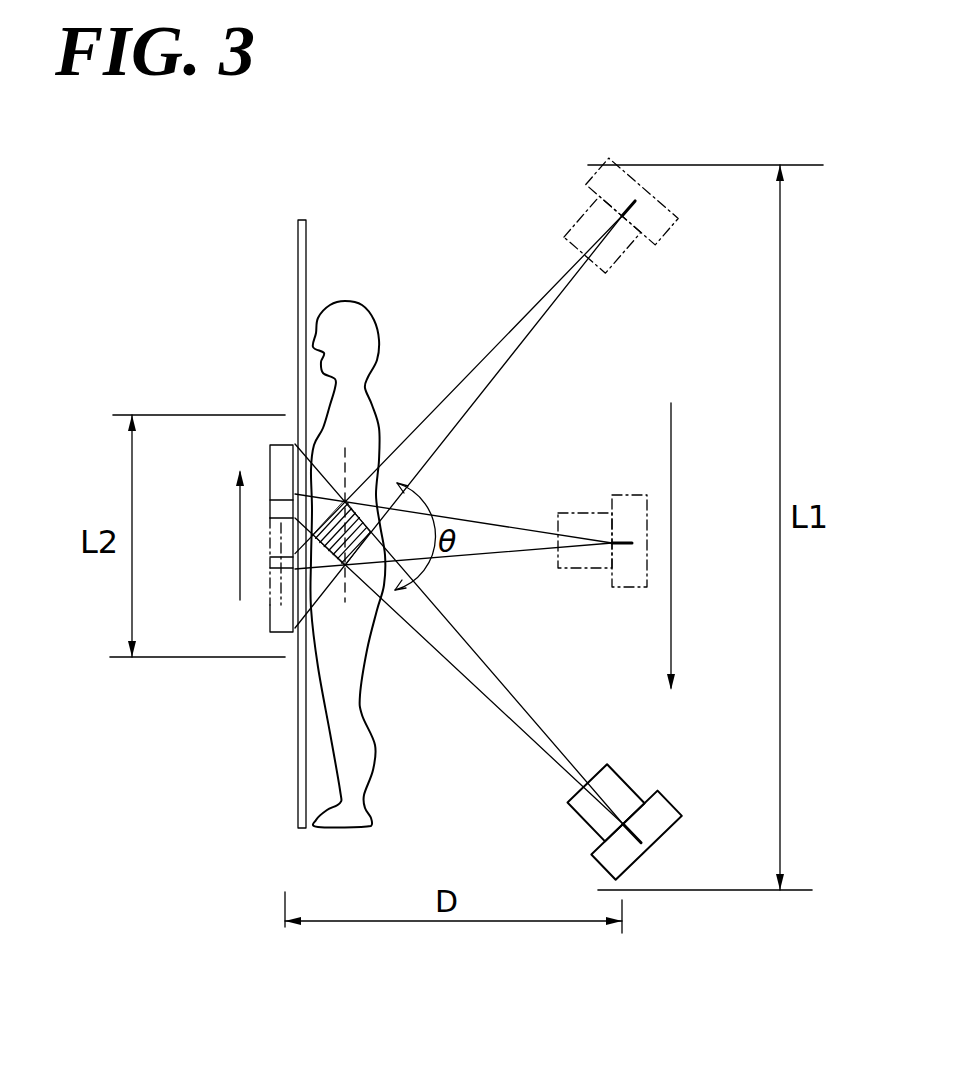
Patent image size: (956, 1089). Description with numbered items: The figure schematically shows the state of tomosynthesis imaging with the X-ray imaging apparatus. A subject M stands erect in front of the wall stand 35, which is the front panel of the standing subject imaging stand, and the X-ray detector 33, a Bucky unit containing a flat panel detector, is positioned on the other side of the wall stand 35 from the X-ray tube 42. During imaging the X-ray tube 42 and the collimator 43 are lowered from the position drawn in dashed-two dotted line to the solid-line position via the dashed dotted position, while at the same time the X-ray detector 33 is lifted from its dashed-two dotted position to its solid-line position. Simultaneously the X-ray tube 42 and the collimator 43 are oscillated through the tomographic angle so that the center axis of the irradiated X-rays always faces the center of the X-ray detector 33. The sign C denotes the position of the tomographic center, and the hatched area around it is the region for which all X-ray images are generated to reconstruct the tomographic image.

The X-ray detector 33 is at (281, 468).
The wall stand 35 is at (307, 238).
The X-ray tube 42 is at (657, 232).
The collimator 43 is at (580, 230).
The subject M is at (355, 330).
The position of the tomographic center C is at (350, 576).